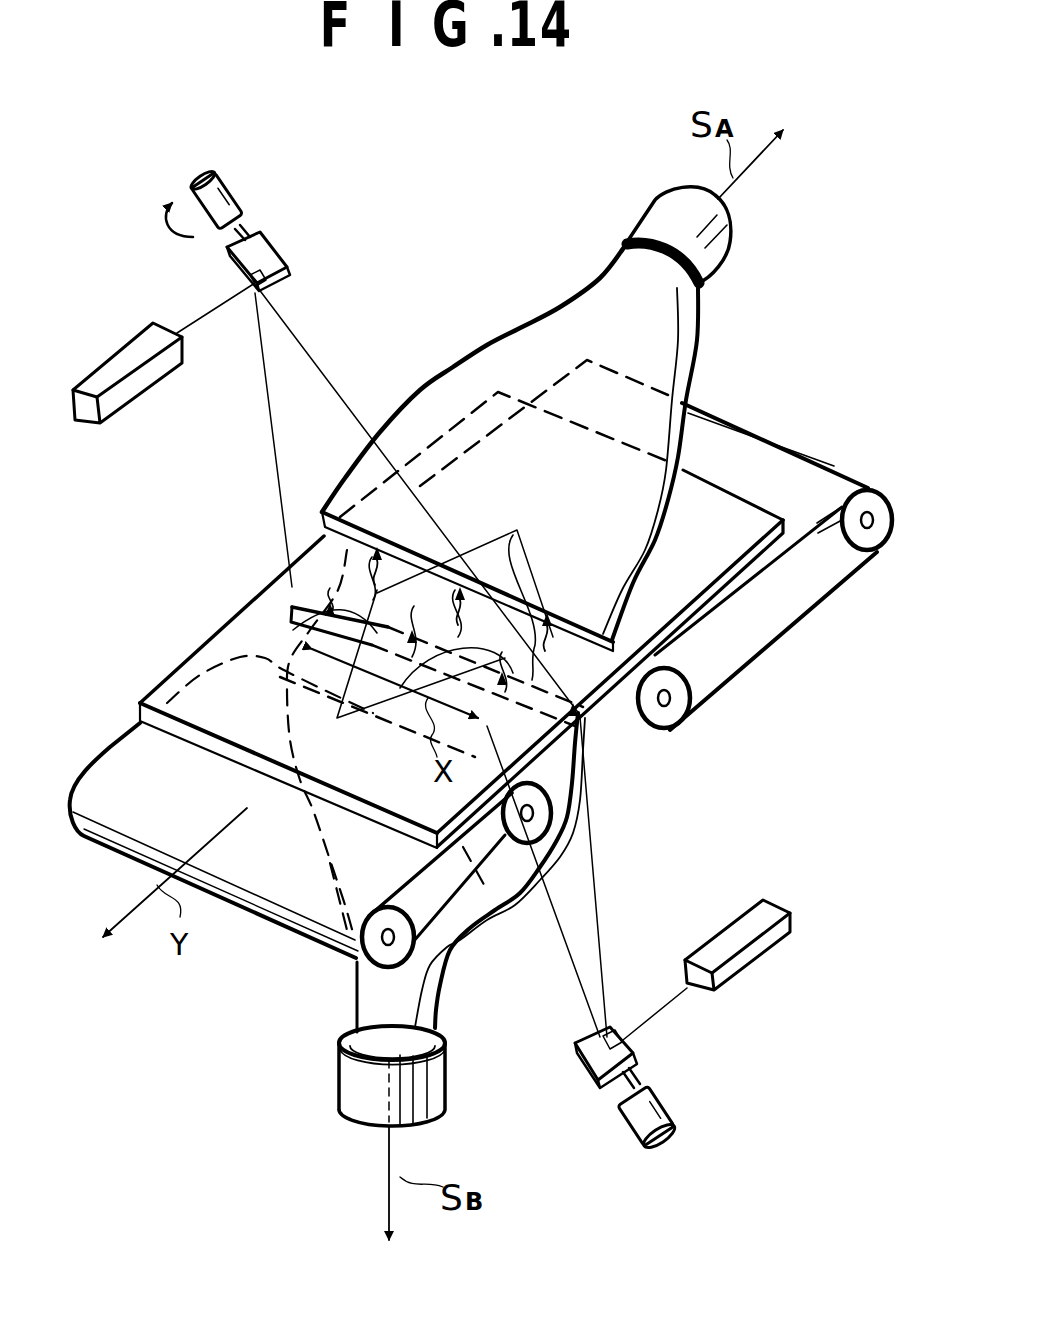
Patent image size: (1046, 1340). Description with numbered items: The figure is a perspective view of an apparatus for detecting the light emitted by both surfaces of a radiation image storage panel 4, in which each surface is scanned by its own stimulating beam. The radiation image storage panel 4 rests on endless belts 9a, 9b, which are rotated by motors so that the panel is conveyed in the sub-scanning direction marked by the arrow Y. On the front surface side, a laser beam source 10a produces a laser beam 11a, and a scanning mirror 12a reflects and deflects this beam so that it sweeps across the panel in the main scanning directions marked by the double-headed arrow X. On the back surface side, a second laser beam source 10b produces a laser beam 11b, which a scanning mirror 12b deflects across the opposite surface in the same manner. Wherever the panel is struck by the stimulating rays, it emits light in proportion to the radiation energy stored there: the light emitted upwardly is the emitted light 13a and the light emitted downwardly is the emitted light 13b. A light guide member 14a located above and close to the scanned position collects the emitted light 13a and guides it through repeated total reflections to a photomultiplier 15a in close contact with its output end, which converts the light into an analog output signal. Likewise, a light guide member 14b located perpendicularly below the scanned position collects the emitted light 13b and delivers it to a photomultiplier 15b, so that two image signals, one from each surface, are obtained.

The radiation image storage panel 4 is at (250, 635).
The endless belt 9a is at (757, 655).
The endless belt 9b is at (120, 777).
The laser beam source 10a is at (135, 350).
The laser beam source 10b is at (773, 937).
The laser beam 11a is at (337, 386).
The laser beam 11b is at (603, 943).
The scanning mirror 12a is at (293, 263).
The scanning mirror 12b is at (637, 1047).
The emitted light 13a is at (468, 586).
The emitted light 13b is at (431, 679).
The light guide member 14a is at (526, 333).
The light guide member 14b is at (578, 832).
The photomultiplier 15a is at (658, 207).
The photomultiplier 15b is at (437, 1093).